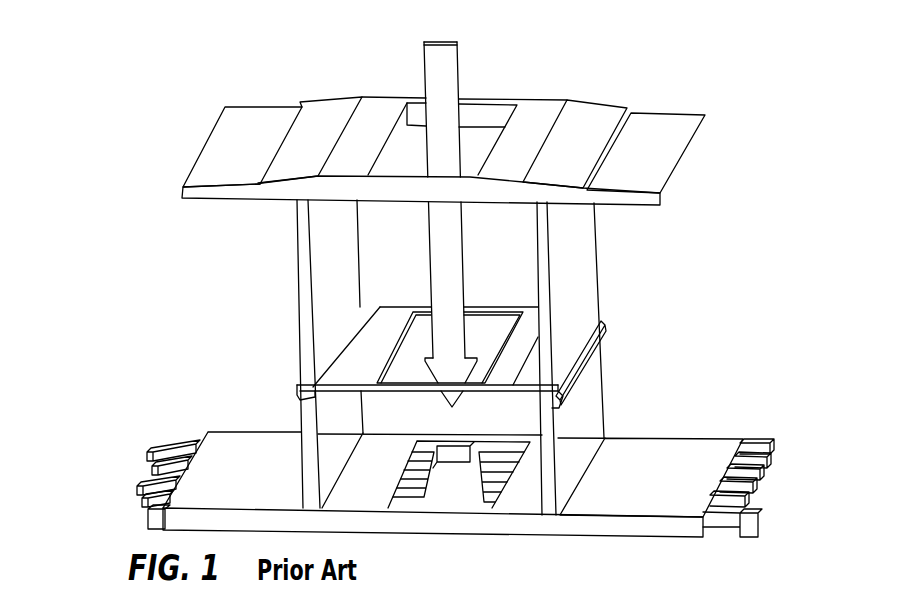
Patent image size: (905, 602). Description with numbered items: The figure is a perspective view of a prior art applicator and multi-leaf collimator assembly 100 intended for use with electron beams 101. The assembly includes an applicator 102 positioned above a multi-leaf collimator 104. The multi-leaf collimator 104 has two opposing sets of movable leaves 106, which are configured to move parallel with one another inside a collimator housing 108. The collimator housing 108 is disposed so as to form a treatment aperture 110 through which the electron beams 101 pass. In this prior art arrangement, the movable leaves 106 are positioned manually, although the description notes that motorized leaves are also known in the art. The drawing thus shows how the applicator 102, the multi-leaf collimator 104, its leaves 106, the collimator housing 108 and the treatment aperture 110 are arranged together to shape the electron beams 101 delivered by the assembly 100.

The applicator and multi-leaf collimator assembly 100 is at (121, 97).
The electron beams 101 is at (459, 62).
The applicator 102 is at (585, 100).
The multi-leaf collimator 104 is at (249, 400).
The movable leaves 106 is at (770, 430).
The collimator housing 108 is at (640, 436).
The treatment aperture 110 is at (454, 486).